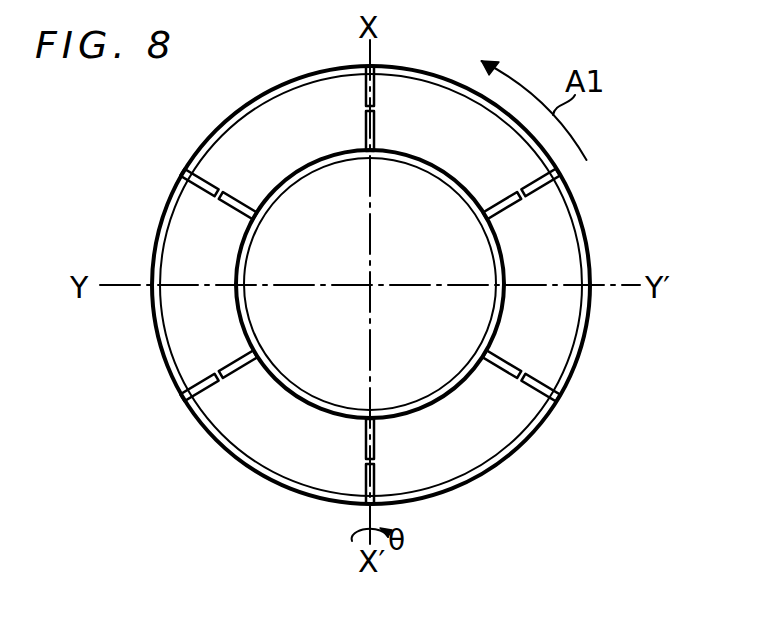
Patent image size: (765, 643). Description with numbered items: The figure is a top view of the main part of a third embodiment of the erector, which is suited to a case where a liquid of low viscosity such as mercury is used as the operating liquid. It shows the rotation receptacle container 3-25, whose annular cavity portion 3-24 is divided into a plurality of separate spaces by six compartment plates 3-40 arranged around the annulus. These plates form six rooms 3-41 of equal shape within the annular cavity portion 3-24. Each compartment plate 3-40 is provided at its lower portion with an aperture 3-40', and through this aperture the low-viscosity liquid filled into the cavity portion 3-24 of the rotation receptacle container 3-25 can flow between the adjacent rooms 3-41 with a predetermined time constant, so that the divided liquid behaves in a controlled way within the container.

The annular cavity portion 3-24 is at (172, 324).
The rotation receptacle container 3-25 is at (234, 116).
The compartment plate 3-40 is at (377, 285).
The aperture 3-40' is at (581, 377).
The room 3-41 is at (407, 88).